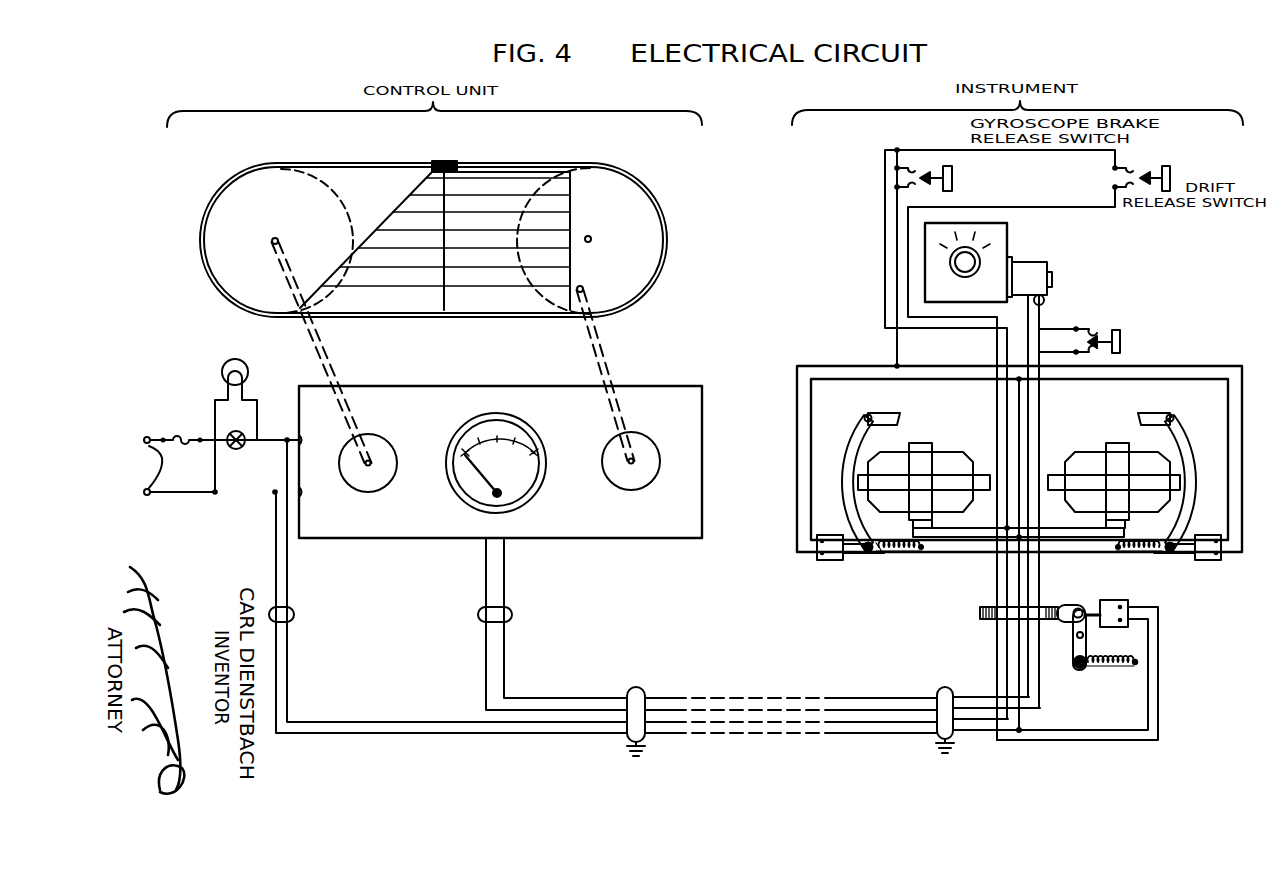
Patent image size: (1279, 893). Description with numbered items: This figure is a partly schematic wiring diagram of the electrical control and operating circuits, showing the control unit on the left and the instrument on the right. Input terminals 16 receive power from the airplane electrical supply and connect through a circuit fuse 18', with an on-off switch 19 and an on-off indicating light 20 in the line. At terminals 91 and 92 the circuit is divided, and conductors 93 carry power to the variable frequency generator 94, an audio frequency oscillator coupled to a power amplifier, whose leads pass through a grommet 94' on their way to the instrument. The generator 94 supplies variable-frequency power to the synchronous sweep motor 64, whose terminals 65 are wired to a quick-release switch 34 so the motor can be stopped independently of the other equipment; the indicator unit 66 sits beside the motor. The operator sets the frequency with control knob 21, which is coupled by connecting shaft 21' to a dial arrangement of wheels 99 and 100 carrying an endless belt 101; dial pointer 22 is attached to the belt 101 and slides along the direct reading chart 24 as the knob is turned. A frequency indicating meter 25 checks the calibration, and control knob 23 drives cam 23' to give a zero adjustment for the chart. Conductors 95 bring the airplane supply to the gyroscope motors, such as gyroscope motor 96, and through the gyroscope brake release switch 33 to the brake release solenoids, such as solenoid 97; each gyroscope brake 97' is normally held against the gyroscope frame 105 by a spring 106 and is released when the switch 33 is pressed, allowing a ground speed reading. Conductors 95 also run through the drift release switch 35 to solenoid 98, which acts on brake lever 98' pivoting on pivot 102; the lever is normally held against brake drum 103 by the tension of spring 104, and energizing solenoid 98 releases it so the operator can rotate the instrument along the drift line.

The input terminals 16 is at (164, 458).
The circuit fuse 18' is at (185, 430).
The on-off switch 19 is at (236, 450).
The on-off indicating light 20 is at (248, 366).
The control knob 21 is at (383, 464).
The connecting shaft 21' is at (326, 350).
The dial pointer 22 is at (448, 299).
The control knob 23 is at (645, 462).
The cam 23' is at (608, 364).
The direct reading chart 24 is at (572, 194).
The frequency indicating meter 25 is at (544, 472).
The gyroscope brake release switch 33 is at (968, 128).
The quick-release switch 34 is at (1114, 337).
The drift release switch 35 is at (1183, 185).
The synchronous electric motor 64 is at (1038, 262).
The terminals 65 is at (1044, 300).
The indicator unit 66 is at (997, 256).
The terminal 91 is at (287, 439).
The terminal 92 is at (273, 495).
The conductors 93 is at (299, 492).
The variable frequency generator 94 is at (500, 444).
The grommet 94' is at (517, 615).
The conductors 95 is at (294, 613).
The gyroscope motor 96 is at (1097, 450).
The gyroscope brake release solenoid 97 is at (1022, 563).
The gyroscope brake 97' is at (1022, 480).
The solenoid 98 is at (1077, 660).
The brake lever 98' is at (1078, 601).
The wheel 99 is at (342, 194).
The wheel 100 is at (553, 312).
The endless belt 101 is at (352, 318).
The pivot 102 is at (1082, 621).
The brake drum 103 is at (985, 607).
The spring 104 is at (1098, 670).
The gyroscope frame 105 is at (1065, 452).
The spring 106 is at (1138, 554).